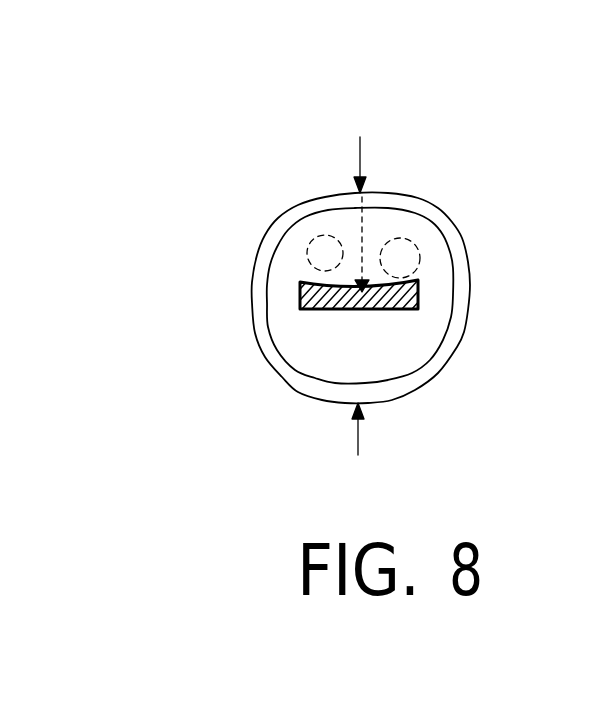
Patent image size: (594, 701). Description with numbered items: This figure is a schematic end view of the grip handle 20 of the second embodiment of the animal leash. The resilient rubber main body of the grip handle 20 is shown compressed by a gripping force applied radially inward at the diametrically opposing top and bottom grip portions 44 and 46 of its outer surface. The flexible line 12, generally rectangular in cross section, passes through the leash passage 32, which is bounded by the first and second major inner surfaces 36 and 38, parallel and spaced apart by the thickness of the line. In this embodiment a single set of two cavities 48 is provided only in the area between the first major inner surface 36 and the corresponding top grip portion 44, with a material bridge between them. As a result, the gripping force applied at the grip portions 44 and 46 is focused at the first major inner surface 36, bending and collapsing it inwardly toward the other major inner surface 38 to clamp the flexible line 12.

The flexible line 12 is at (300, 301).
The grip handle 20 is at (452, 219).
The leash passage 32 is at (423, 295).
The first major inner surface 36 is at (306, 255).
The second major inner surface 38 is at (306, 256).
The top grip portion 44 is at (387, 193).
The bottom grip portion 46 is at (388, 403).
The cavities 48 is at (316, 244).